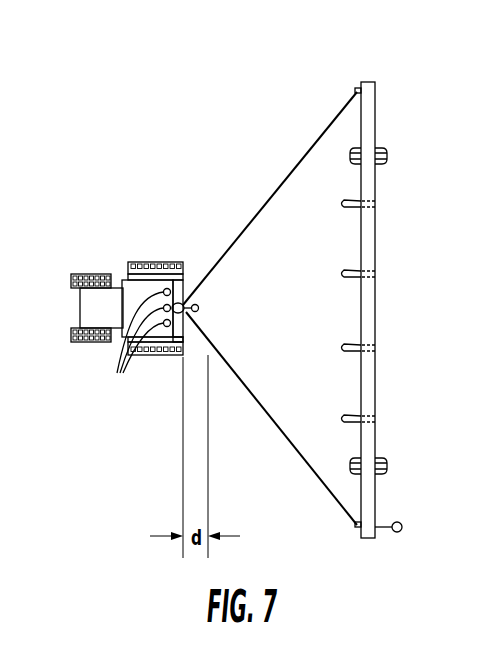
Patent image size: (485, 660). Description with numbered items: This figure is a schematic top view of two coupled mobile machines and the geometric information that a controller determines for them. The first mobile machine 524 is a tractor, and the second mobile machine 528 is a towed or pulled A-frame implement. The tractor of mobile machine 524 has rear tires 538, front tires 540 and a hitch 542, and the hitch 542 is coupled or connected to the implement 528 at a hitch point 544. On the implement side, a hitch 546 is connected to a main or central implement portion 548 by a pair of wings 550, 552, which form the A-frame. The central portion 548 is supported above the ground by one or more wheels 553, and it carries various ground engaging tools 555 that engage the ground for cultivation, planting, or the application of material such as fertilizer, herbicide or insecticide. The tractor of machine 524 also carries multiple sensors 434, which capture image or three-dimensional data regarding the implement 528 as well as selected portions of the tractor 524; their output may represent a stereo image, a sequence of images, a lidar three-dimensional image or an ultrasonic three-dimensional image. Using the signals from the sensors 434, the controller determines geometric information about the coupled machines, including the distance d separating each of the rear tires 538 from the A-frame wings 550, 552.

The mobile machine 524 is at (118, 246).
The front tires 540 is at (77, 273).
The rear tires 538 is at (158, 262).
The hitch 542 is at (175, 358).
The sensors 434 is at (122, 370).
The hitch point 544 is at (181, 303).
The hitch 546 is at (184, 305).
The mobile machine 528 is at (303, 141).
The wing 550 is at (228, 259).
The wing 552 is at (229, 357).
The central implement portion 548 is at (367, 81).
The wheels 553 is at (388, 157).
The ground engaging tools 555 is at (343, 204).